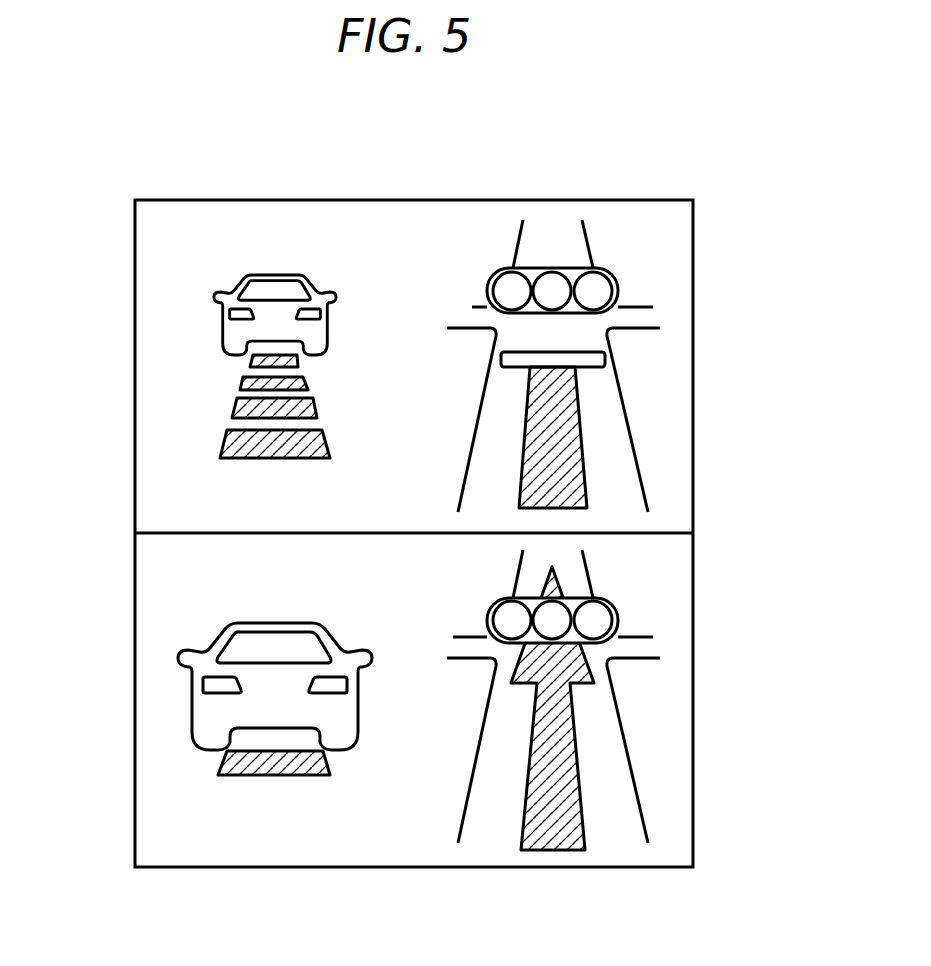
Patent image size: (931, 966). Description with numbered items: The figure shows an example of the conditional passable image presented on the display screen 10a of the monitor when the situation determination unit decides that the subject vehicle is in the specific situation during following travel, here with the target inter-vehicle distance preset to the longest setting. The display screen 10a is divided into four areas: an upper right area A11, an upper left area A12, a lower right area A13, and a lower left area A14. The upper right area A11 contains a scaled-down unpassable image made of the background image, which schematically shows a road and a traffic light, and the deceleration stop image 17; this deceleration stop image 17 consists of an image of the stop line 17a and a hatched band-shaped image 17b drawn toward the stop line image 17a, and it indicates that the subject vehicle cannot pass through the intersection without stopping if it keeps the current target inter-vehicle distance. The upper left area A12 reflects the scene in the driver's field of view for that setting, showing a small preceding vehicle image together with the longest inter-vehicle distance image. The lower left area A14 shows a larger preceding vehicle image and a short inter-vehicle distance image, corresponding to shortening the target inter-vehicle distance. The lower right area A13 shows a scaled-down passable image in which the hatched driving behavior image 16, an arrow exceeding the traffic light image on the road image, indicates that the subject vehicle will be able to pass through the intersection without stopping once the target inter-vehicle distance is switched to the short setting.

The display screen 10a is at (393, 220).
The upper right area A11 is at (637, 325).
The upper left area A12 is at (195, 310).
The lower right area A13 is at (618, 749).
The lower left area A14 is at (212, 745).
The driving behavior image 16 is at (520, 827).
The deceleration stop image 17 is at (664, 414).
The image of the stop line 17a is at (577, 349).
The band-shaped image 17b is at (582, 443).